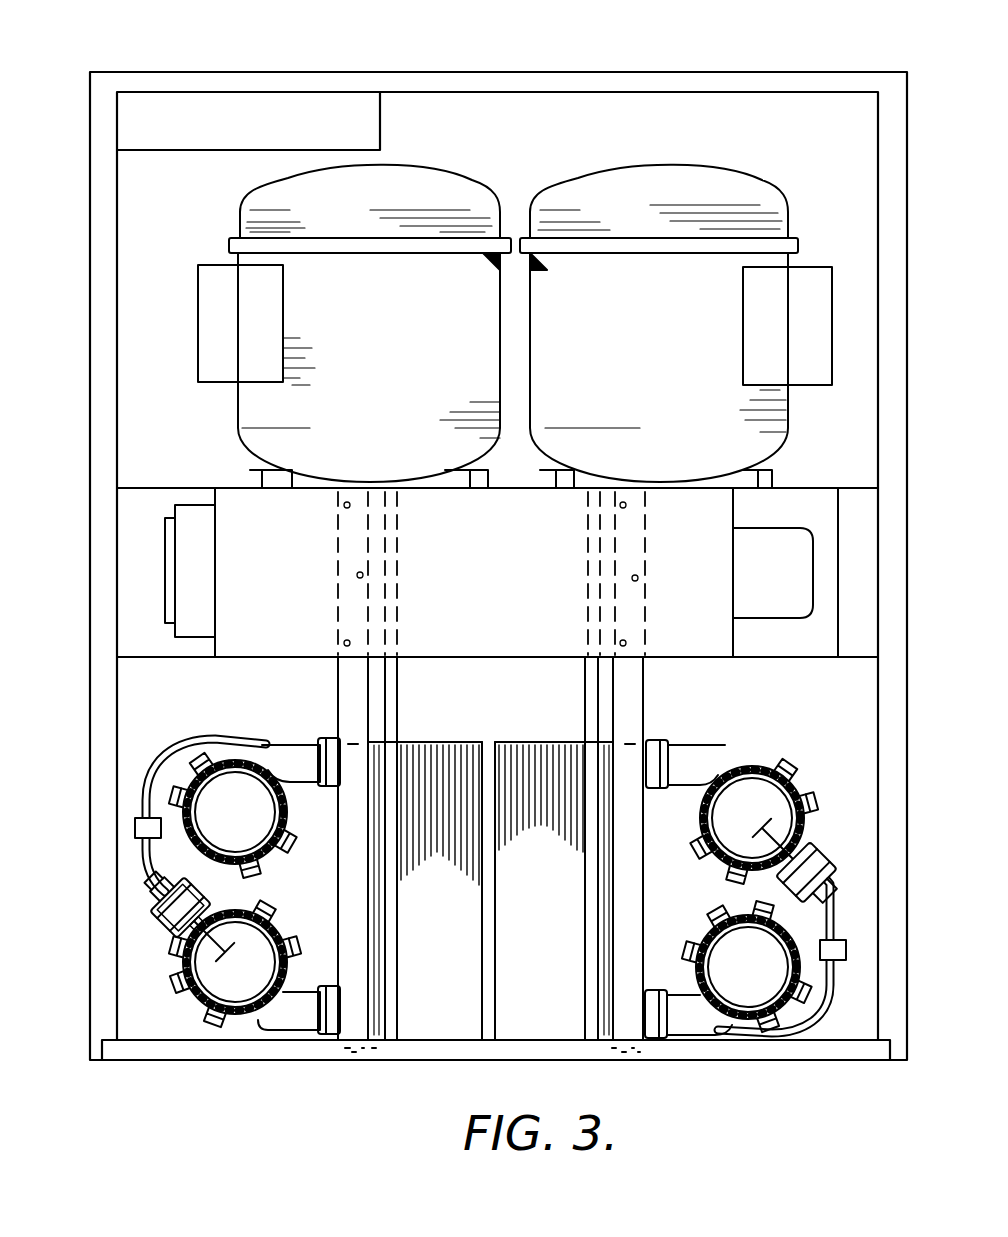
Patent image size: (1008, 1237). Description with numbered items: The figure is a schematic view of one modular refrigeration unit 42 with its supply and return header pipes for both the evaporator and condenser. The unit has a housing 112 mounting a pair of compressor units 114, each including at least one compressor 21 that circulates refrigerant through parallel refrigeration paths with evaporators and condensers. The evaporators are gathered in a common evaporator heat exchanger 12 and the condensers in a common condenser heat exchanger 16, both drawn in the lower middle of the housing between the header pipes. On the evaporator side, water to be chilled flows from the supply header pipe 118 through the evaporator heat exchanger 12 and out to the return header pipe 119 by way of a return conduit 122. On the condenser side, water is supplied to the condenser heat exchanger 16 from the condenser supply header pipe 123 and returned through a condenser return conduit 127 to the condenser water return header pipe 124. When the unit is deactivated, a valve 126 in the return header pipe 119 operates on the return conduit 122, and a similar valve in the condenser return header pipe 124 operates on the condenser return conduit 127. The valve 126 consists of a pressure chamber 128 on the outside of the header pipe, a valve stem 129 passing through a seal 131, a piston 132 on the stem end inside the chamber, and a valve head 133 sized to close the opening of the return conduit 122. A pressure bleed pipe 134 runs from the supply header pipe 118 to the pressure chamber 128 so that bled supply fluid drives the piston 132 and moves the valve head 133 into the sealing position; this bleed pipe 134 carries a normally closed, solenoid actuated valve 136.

The modular refrigeration unit 42 is at (270, 84).
The compressor unit 114 is at (515, 326).
The housing 112 is at (501, 572).
The evaporator heat exchanger 12 is at (437, 775).
The condenser heat exchanger 16 is at (532, 773).
The compressor 21 is at (290, 768).
The supply header pipe 118 is at (238, 762).
The condenser water return header pipe 124 is at (744, 772).
The valve head 133 is at (237, 985).
The condenser supply header pipe 123 is at (745, 1003).
The return conduit 122 is at (298, 1012).
The condenser return conduit 127 is at (683, 765).
The valve 126 is at (222, 972).
The pressure chamber 128 is at (162, 920).
The valve stem 129 is at (190, 960).
The seal 131 is at (182, 932).
The piston 132 is at (150, 905).
The pressure bleed pipe 134 is at (172, 752).
The solenoid actuated valve 136 is at (135, 829).
The return header pipe 119 is at (162, 993).